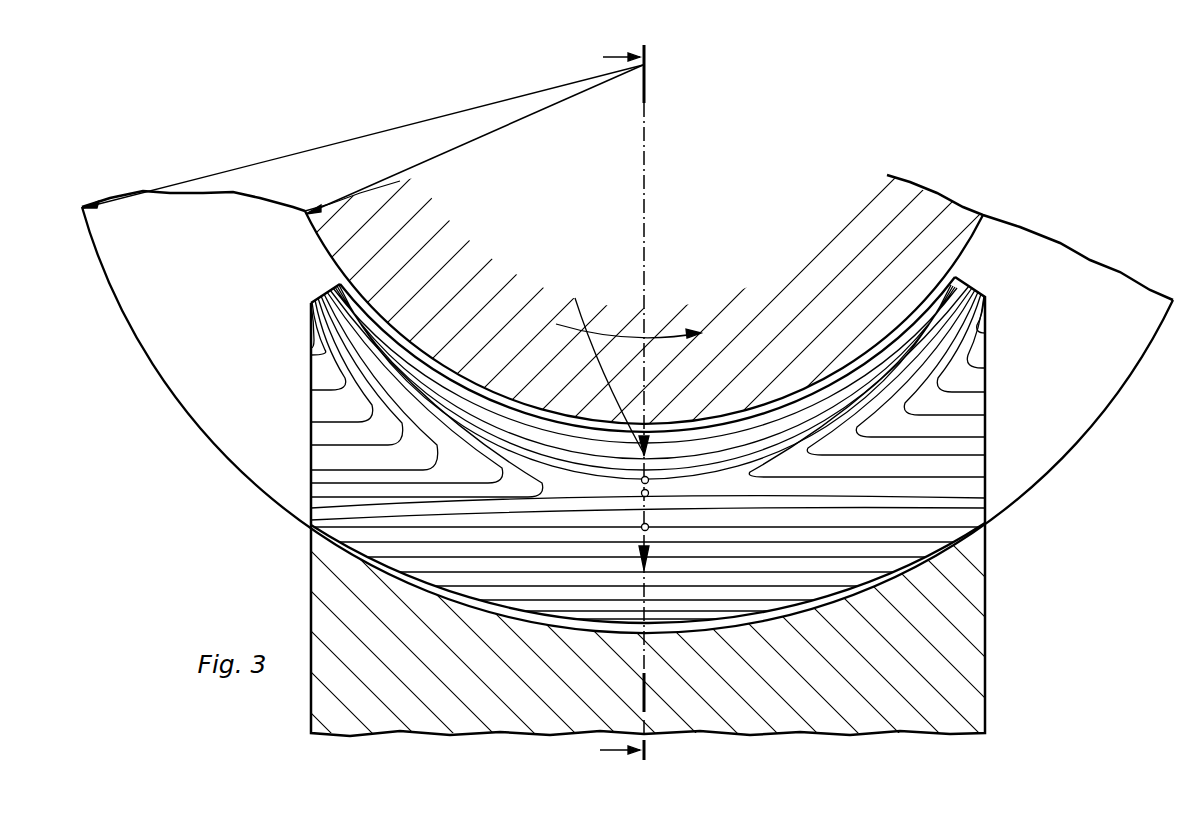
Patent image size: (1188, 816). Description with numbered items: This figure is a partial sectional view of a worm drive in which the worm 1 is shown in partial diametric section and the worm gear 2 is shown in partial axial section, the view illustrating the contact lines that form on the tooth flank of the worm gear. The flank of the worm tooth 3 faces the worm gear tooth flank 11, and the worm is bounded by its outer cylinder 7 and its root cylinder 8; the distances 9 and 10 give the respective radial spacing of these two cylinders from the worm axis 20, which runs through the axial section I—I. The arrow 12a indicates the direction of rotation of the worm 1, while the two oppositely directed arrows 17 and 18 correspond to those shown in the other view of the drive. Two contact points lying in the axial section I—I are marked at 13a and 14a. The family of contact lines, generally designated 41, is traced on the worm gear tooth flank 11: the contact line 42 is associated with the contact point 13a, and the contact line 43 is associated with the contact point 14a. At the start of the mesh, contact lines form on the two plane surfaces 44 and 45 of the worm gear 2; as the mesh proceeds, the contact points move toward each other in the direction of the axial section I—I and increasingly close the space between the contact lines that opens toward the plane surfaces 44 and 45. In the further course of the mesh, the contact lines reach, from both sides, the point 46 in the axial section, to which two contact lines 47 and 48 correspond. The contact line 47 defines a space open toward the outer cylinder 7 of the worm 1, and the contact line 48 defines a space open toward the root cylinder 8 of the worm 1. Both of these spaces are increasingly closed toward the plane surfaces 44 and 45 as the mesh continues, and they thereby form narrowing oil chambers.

The worm 1 is at (450, 283).
The worm gear 2 is at (433, 691).
The flank of the worm tooth 3 is at (185, 311).
The outer cylinder of the worm 7 is at (270, 496).
The root cylinder of the worm 8 is at (325, 247).
The distance of the outer cylinder from the worm axis 9 is at (363, 136).
The distance of the root cylinder from the worm axis 10 is at (474, 139).
The worm gear tooth flank 11 is at (968, 442).
The arrow indicating direction of rotation 12a is at (628, 324).
The contact point 13a is at (648, 477).
The contact point 14a is at (646, 531).
The arrow 17 is at (608, 358).
The arrow 18 is at (644, 568).
The worm axis 20 is at (633, 403).
The family of contact lines 41 is at (338, 458).
The contact line 42 is at (742, 470).
The contact line 43 is at (765, 525).
The plane surface of the worm gear 44 is at (311, 386).
The plane surface of the worm gear 45 is at (987, 400).
The point in the axial section 46 is at (647, 496).
The contact line 47 is at (808, 492).
The contact line 48 is at (750, 478).